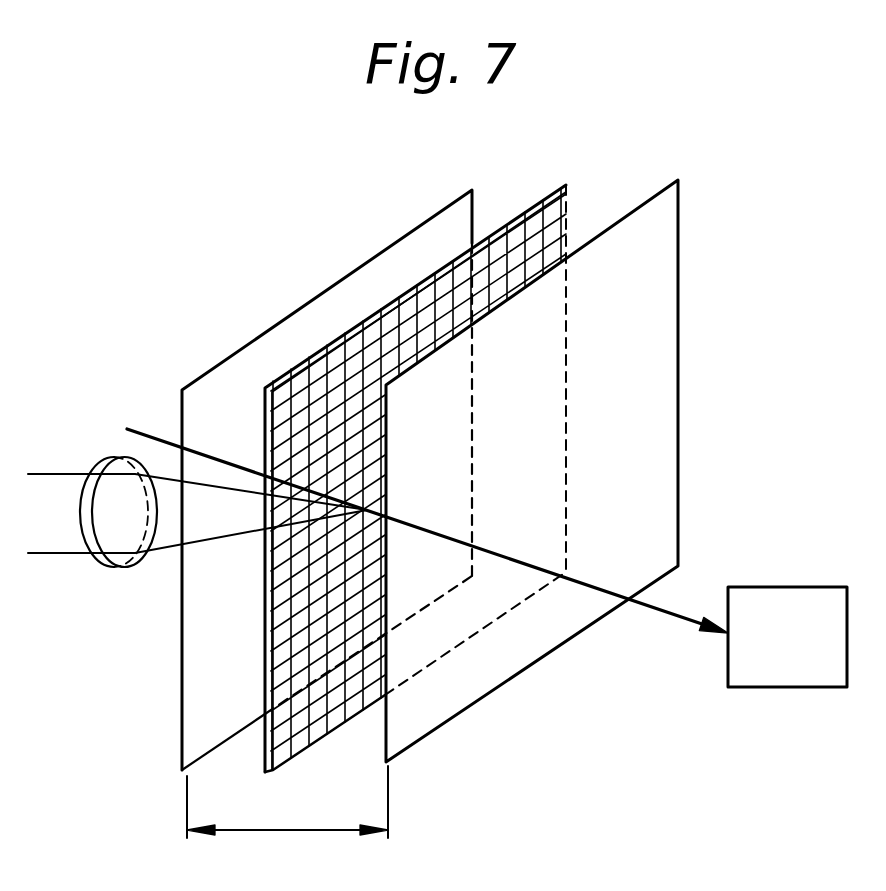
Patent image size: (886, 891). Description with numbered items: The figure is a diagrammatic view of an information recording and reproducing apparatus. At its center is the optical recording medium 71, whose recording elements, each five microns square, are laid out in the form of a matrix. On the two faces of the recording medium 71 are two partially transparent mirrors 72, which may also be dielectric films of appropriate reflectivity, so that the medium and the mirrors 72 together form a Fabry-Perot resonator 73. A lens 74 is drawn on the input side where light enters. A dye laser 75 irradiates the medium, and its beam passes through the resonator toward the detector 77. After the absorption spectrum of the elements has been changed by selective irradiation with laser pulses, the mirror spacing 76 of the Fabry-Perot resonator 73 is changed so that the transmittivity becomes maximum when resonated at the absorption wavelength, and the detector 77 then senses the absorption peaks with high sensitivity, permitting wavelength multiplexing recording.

The optical recording medium 71 is at (571, 184).
The partially transparent mirrors 72 is at (470, 188).
The Fabry-Perot resonator 73 is at (393, 380).
The lens 74 is at (112, 558).
The dye laser 75 is at (132, 427).
The mirror spacing 76 is at (287, 802).
The detector 77 is at (798, 653).